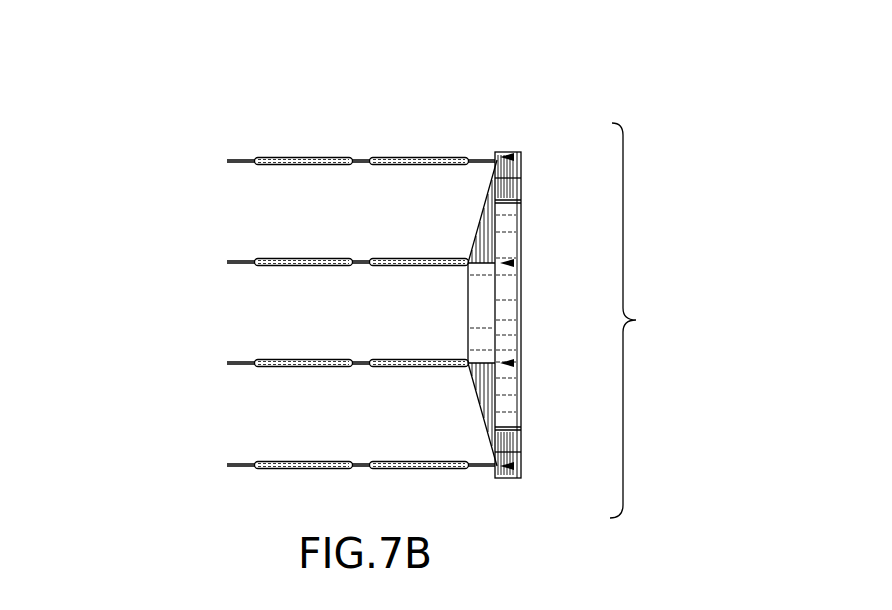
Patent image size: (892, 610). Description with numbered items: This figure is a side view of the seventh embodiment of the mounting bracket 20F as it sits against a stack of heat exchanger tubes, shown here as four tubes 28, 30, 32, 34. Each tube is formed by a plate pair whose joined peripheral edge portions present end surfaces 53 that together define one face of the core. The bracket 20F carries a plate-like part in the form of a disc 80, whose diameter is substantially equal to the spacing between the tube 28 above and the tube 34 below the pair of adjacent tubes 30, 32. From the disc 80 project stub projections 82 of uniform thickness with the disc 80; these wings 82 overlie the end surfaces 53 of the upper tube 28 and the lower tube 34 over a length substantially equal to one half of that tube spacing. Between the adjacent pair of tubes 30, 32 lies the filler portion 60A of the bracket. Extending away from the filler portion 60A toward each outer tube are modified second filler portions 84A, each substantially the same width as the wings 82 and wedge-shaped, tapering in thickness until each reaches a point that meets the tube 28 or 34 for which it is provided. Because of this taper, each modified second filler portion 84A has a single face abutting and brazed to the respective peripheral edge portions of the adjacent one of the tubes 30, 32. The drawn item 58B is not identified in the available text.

The mounting bracket 20F is at (499, 122).
The tube 28 is at (212, 149).
The tube 30 is at (212, 252).
The tube 32 is at (212, 351).
The tube 34 is at (212, 455).
The end surfaces 53 is at (514, 157).
The wire retention member 58B is at (655, 320).
The filler portion 60A is at (466, 328).
The disc 80 is at (503, 302).
The stub projections 82 is at (508, 178).
The modified second filler portions 84A is at (488, 235).